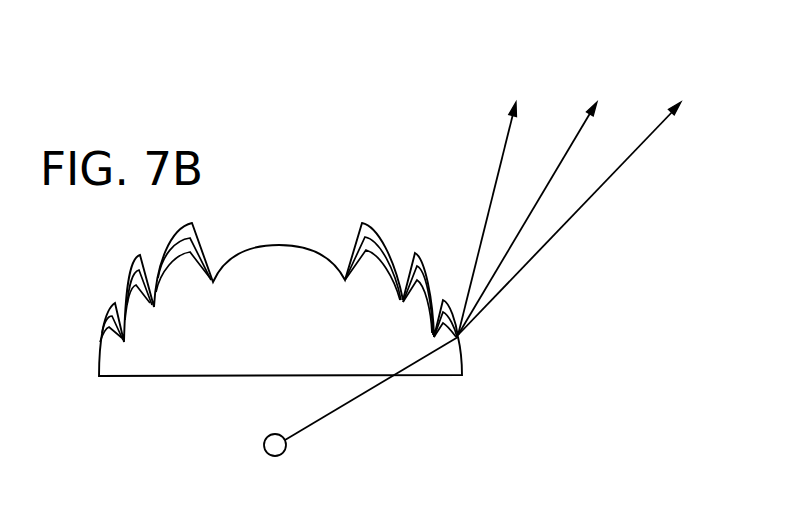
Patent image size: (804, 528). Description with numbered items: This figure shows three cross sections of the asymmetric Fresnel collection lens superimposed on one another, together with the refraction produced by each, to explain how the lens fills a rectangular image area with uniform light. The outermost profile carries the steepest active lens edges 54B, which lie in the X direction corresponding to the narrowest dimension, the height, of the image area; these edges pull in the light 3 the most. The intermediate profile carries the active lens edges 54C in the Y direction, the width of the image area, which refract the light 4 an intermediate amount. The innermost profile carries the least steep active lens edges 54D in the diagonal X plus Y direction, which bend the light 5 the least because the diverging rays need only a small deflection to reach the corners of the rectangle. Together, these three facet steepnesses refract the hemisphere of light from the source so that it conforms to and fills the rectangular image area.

The active lens edges 54B is at (370, 222).
The active lens edges 54C is at (377, 240).
The active lens edges 54D is at (388, 250).
The light 3 is at (493, 203).
The light 4 is at (532, 203).
The light 5 is at (574, 203).